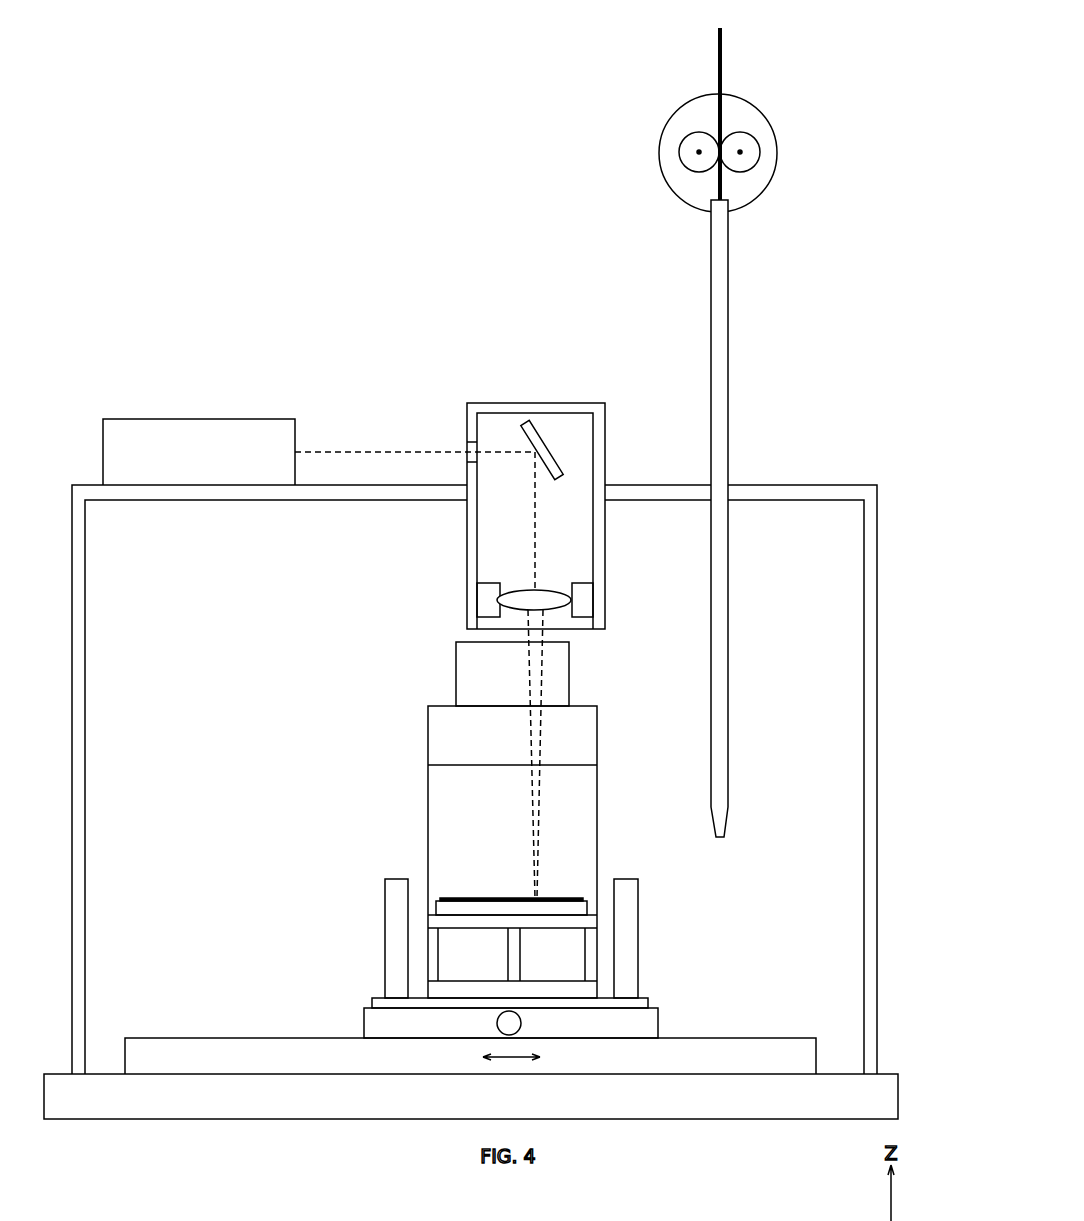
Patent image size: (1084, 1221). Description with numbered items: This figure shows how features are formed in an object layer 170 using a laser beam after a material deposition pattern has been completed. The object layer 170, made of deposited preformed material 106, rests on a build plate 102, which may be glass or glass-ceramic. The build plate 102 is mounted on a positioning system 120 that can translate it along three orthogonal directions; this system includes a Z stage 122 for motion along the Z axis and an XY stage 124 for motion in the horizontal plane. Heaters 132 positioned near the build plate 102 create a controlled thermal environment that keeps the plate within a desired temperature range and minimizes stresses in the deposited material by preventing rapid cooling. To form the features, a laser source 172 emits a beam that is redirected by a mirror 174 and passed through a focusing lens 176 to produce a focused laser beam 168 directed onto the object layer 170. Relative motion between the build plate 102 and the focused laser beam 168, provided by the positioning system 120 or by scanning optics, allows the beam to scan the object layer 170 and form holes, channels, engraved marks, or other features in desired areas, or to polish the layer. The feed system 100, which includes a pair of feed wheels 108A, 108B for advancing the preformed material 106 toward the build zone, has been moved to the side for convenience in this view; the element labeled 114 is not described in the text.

The feed system 100 is at (748, 75).
The build plate 102 is at (452, 909).
The preformed material 106 is at (718, 88).
The feed wheel 108A is at (678, 150).
The feed wheel 108B is at (762, 150).
The fiber junction 114 is at (720, 150).
The positioning system 120 is at (441, 688).
The Z stage 122 is at (428, 850).
The XY stage 124 is at (748, 1038).
The heaters 132 is at (392, 942).
The focused laser beam 168 is at (540, 808).
The object layer 170 is at (555, 898).
The laser source 172 is at (207, 418).
The mirror 174 is at (545, 440).
The focusing lens 176 is at (521, 590).